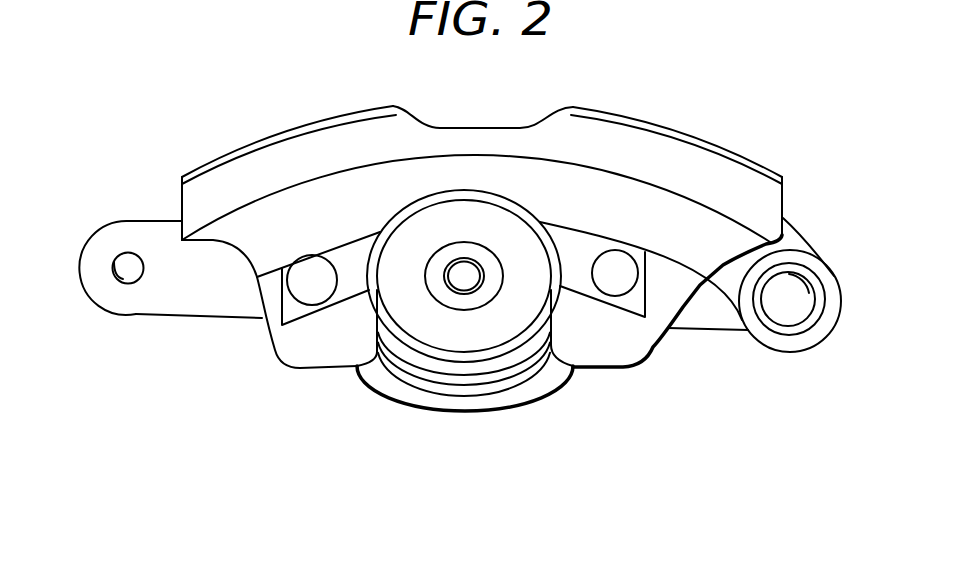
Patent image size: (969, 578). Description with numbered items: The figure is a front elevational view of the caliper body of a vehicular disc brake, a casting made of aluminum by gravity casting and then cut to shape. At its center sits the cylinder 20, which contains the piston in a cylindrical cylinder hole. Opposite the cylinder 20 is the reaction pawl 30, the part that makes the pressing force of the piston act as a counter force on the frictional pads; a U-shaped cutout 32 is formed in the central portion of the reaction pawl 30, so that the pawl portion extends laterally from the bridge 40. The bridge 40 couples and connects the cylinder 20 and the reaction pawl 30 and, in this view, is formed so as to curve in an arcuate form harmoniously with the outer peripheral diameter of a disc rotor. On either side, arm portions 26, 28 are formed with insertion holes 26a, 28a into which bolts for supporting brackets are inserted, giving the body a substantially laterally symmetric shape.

The cylinder 20 is at (456, 350).
The arm portion 26 is at (812, 328).
The insertion hole 26a is at (807, 290).
The arm portion 28 is at (144, 298).
The insertion hole 28a is at (120, 278).
The reaction pawl 30 is at (622, 350).
The U-shaped cutout 32 is at (557, 280).
The bridge 40 is at (700, 158).